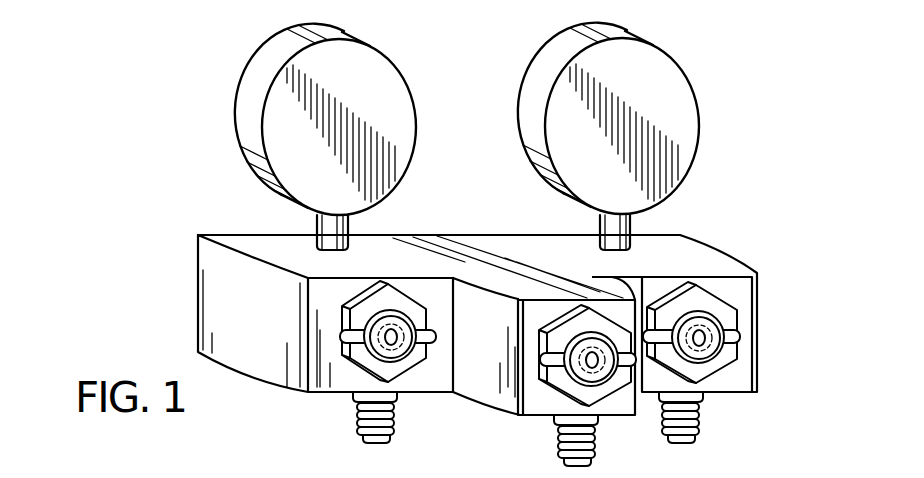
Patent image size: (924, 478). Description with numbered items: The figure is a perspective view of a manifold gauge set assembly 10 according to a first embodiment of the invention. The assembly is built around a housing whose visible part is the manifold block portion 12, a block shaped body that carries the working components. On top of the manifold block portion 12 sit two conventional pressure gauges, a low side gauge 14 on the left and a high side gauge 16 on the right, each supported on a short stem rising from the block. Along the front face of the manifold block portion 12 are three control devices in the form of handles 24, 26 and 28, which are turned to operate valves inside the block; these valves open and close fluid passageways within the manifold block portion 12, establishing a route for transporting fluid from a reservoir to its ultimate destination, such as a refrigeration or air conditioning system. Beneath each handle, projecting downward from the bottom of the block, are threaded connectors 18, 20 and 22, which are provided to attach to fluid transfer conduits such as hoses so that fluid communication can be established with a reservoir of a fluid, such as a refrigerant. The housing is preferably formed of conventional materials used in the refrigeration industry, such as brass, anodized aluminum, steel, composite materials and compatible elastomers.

The manifold gauge set assembly 10 is at (822, 328).
The manifold block portion 12 is at (737, 377).
The low side gauge 14 is at (242, 84).
The high side gauge 16 is at (673, 87).
The connector 18 is at (358, 430).
The connector 20 is at (555, 447).
The connector 22 is at (658, 420).
The handle 24 is at (350, 327).
The handle 26 is at (563, 348).
The handle 28 is at (730, 318).